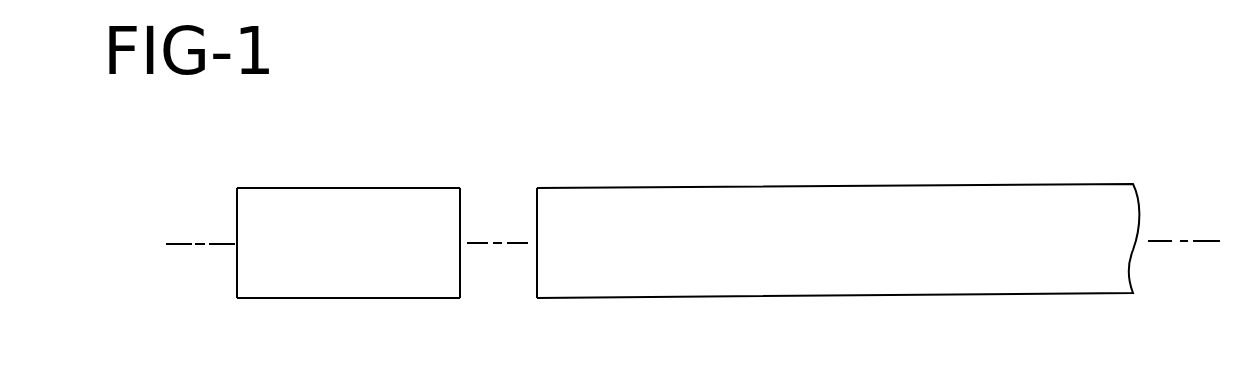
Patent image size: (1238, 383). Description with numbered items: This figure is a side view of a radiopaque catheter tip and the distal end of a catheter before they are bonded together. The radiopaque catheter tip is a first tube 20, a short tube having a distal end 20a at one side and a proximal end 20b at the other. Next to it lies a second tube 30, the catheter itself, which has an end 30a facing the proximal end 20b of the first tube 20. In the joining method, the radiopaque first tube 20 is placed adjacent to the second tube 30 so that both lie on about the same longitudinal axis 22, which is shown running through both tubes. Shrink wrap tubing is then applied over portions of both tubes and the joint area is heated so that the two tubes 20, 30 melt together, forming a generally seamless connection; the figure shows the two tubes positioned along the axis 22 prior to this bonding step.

The first tube 20 is at (465, 124).
The distal end 20a is at (237, 188).
The proximal end 20b is at (460, 188).
The second tube 30 is at (1146, 122).
The end 30a is at (537, 298).
The longitudinal axis 22 is at (1183, 242).